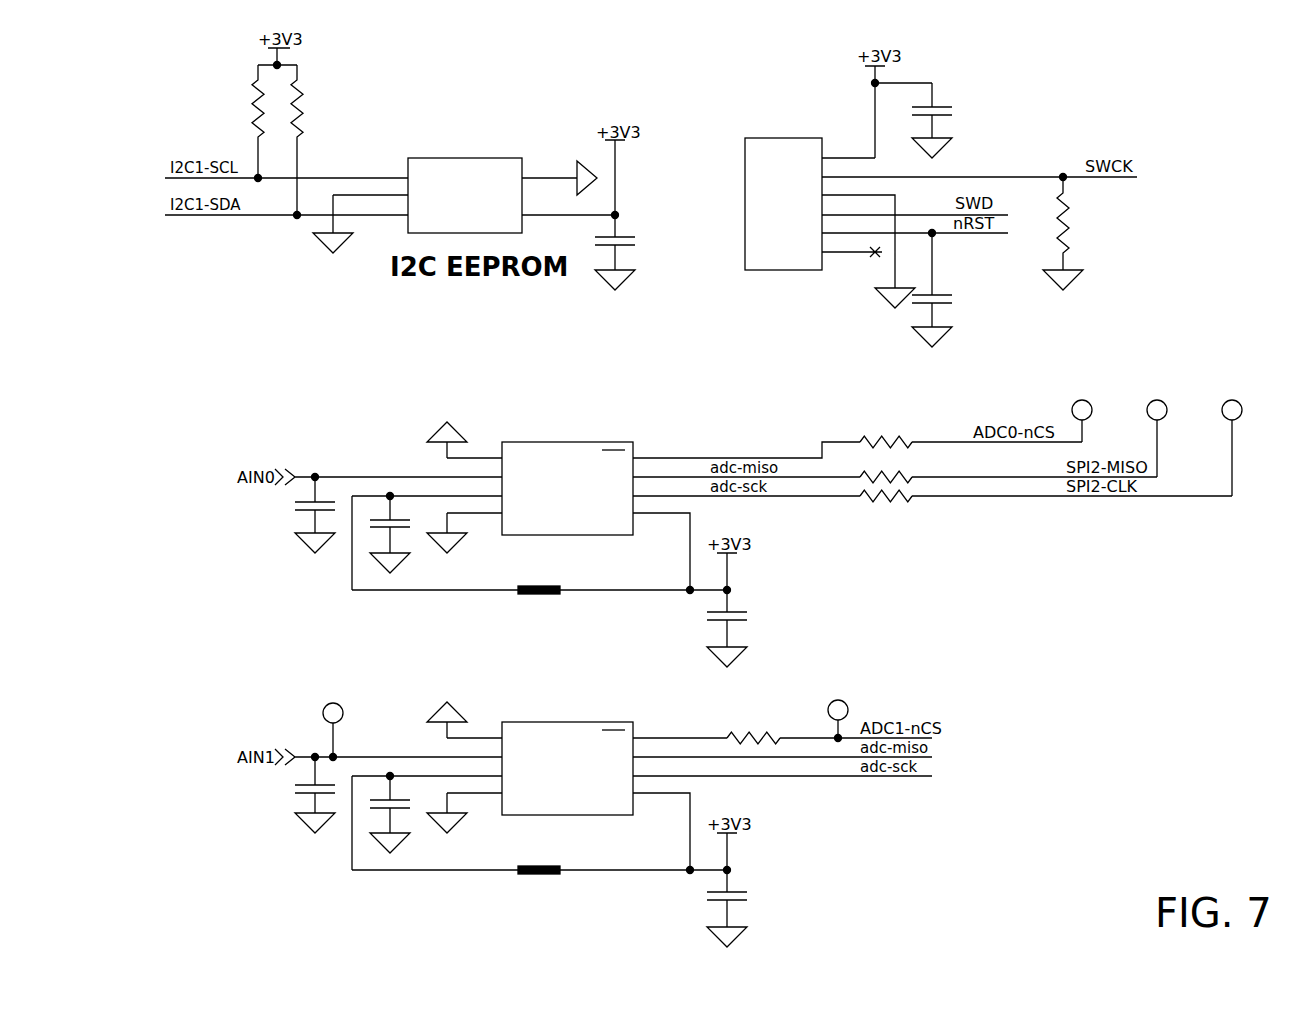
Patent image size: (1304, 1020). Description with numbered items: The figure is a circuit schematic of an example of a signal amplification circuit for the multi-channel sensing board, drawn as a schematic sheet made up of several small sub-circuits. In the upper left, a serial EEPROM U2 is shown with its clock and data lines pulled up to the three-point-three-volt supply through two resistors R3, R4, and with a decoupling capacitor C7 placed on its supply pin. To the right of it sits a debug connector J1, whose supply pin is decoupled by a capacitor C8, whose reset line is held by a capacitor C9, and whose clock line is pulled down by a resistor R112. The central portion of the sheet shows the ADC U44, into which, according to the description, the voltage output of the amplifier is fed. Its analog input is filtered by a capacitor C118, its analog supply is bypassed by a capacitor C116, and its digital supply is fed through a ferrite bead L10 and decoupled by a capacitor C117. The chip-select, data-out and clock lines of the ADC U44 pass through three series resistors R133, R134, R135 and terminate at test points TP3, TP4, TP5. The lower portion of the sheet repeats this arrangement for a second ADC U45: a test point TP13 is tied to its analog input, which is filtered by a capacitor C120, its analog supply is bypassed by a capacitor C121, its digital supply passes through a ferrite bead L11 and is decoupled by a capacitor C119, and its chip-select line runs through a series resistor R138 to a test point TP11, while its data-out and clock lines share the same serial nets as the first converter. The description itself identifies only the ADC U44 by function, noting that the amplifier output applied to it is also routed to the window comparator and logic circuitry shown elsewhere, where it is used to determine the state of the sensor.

The pull-up resistor 2K26 R3 is at (233, 121).
The pull-up resistor 2K26 R4 is at (324, 140).
The I2C EEPROM CAT24AA16 U2 is at (464, 176).
The decoupling capacitor 100n C7 is at (640, 258).
The debug connector CON6 J1 is at (940, 204).
The decoupling capacitor 100n C8 is at (960, 120).
The reset capacitor 10n 100V C9 is at (978, 290).
The pull-down resistor 100K R112 is at (1089, 233).
The ADC U44 is at (566, 478).
The input capacitor 270p C118 is at (316, 533).
The supply capacitor 4u7 C116 is at (391, 553).
The ferrite bead BLM21PG221SN1 L10 is at (521, 572).
The decoupling capacitor 100n C117 is at (756, 637).
The series resistor 30R1 R133 is at (888, 435).
The series resistor 30R1 R134 is at (888, 470).
The series resistor 30R1 R135 is at (888, 489).
The test point ADC0CS TP3 is at (1086, 382).
The test point SPI2-MISO TP4 is at (1161, 391).
The test point SPI2-SCK TP5 is at (1236, 405).
The ADC ADS7049 U45 is at (566, 758).
The test point AIN1 TP13 is at (334, 707).
The input capacitor 270p C120 is at (316, 813).
The supply capacitor 4u7 C121 is at (391, 833).
The ferrite bead BLM21PG221SN1 L11 is at (521, 852).
The series resistor 30R1 R138 is at (757, 731).
The test point ADC1CS TP11 is at (841, 677).
The decoupling capacitor 100n C119 is at (756, 917).